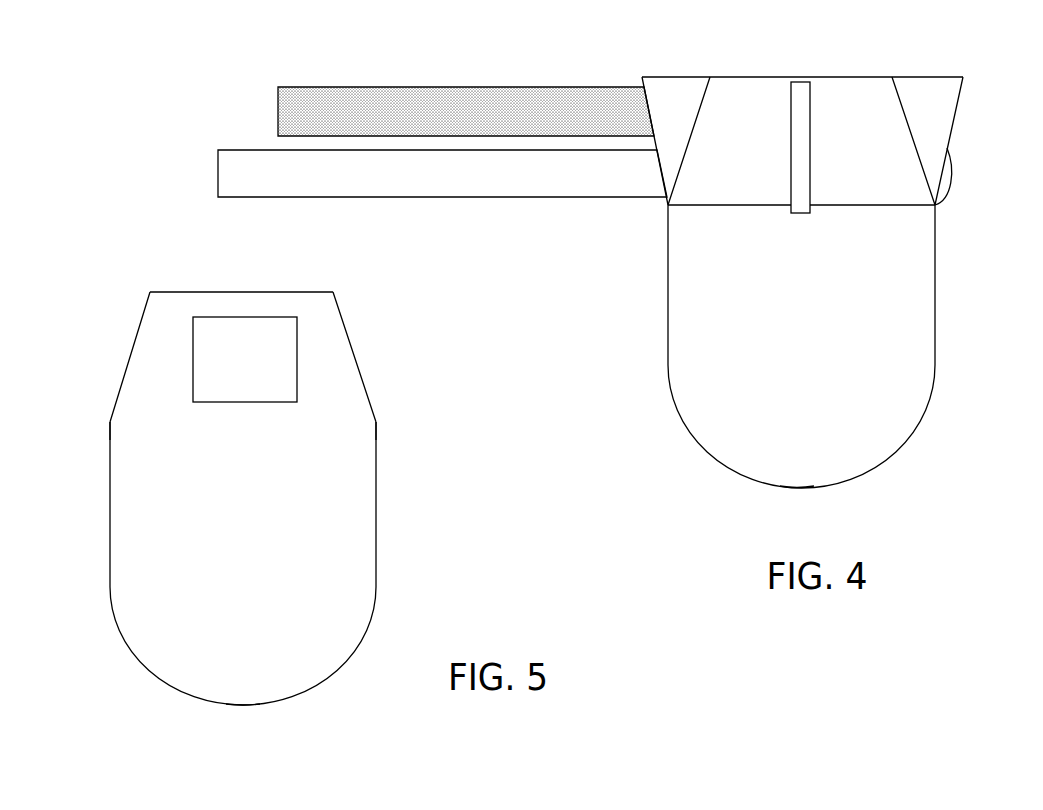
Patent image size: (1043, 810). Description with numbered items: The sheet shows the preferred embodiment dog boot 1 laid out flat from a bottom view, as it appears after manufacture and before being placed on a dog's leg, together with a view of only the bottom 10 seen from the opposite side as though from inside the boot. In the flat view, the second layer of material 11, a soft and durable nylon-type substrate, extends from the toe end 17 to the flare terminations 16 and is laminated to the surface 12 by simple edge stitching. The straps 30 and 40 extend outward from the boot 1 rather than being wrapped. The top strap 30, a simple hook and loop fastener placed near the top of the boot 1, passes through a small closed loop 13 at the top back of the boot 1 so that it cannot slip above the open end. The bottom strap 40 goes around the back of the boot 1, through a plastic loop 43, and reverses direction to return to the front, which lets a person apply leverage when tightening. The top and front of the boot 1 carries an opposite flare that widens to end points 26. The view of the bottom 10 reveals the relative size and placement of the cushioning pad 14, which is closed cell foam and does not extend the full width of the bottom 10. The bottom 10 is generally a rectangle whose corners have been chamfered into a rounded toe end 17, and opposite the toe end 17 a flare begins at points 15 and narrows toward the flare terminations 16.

In FIG. 4, the boot 1 is at (578, 258).
In FIG. 4, the bottom 10 is at (664, 323).
In FIG. 4, the second layer of material 11 is at (737, 174).
In FIG. 5, the second layer of material 11 is at (216, 526).
In FIG. 4, the surface 12 is at (783, 366).
In FIG. 4, the closed loop 13 is at (801, 84).
In FIG. 5, the cushioning pad 14 is at (224, 366).
In FIG. 5, the points 15 is at (110, 422).
In FIG. 4, the flare terminations 16 is at (710, 77).
In FIG. 5, the flare terminations 16 is at (150, 292).
In FIG. 4, the toe end 17 is at (812, 490).
In FIG. 5, the toe end 17 is at (245, 705).
In FIG. 4, the end points 26 is at (642, 77).
In FIG. 4, the strap 30 is at (420, 84).
In FIG. 4, the strap 40 is at (409, 199).
In FIG. 4, the plastic loop 43 is at (948, 158).